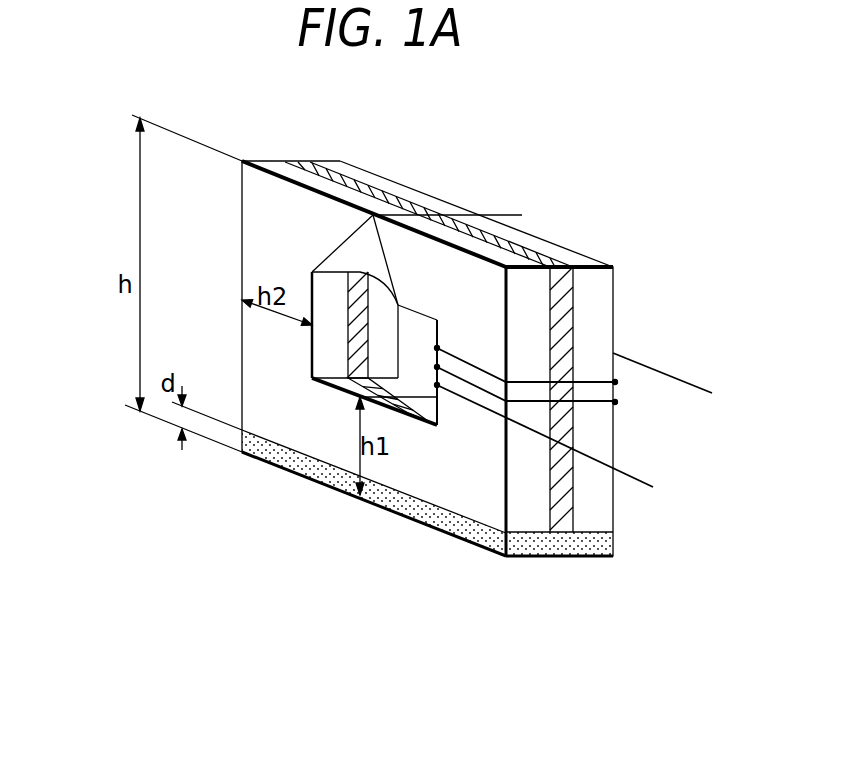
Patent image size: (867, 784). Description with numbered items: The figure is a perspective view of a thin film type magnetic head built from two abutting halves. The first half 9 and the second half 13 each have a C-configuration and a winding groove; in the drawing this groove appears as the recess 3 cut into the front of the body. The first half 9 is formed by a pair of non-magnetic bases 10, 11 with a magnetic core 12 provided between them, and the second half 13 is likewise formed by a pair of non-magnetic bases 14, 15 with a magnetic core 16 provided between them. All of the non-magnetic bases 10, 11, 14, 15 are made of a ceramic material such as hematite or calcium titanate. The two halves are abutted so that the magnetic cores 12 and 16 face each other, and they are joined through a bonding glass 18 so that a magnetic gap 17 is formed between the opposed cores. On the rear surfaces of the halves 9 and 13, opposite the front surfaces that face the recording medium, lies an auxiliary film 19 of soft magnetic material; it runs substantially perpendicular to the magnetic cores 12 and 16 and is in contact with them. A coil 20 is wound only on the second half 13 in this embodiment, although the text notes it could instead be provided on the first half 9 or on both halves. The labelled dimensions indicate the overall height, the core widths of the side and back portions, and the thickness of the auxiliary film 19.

The first half 9 is at (270, 162).
The non-magnetic base 10 is at (244, 225).
The magnetic core 12 is at (310, 167).
The bonding glass 18 is at (343, 253).
The non-magnetic base 11 is at (400, 188).
The magnetic gap 17 is at (433, 195).
The magnetic core 16 is at (522, 215).
The non-magnetic base 15 is at (552, 242).
The second half 13 is at (615, 437).
The recess 3 is at (415, 322).
The coil 20 is at (688, 383).
The auxiliary film 19 is at (283, 460).
The non-magnetic base 14 is at (455, 498).